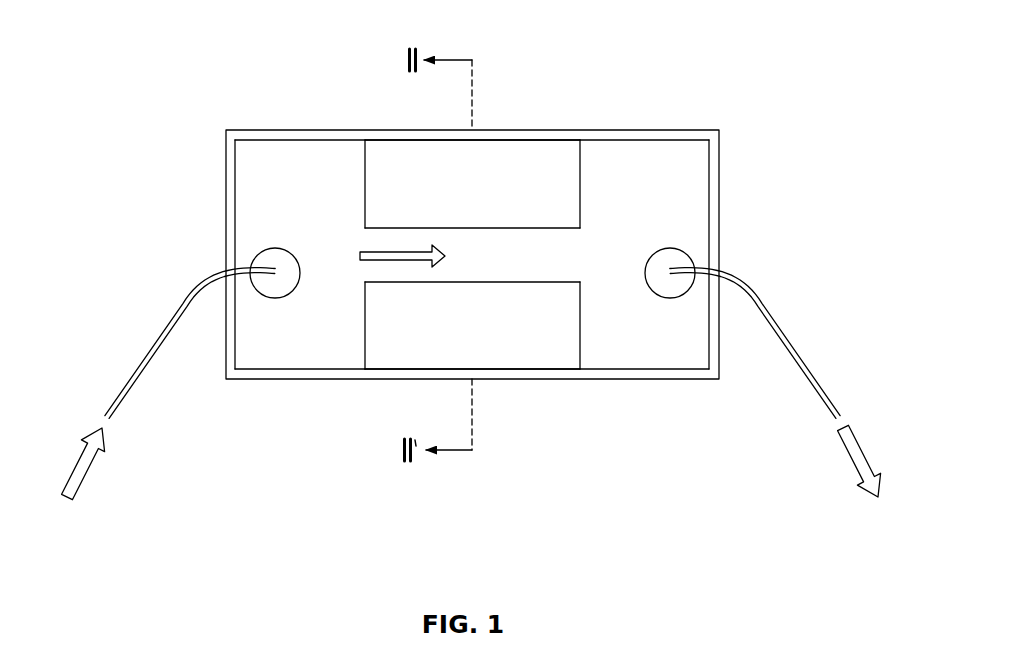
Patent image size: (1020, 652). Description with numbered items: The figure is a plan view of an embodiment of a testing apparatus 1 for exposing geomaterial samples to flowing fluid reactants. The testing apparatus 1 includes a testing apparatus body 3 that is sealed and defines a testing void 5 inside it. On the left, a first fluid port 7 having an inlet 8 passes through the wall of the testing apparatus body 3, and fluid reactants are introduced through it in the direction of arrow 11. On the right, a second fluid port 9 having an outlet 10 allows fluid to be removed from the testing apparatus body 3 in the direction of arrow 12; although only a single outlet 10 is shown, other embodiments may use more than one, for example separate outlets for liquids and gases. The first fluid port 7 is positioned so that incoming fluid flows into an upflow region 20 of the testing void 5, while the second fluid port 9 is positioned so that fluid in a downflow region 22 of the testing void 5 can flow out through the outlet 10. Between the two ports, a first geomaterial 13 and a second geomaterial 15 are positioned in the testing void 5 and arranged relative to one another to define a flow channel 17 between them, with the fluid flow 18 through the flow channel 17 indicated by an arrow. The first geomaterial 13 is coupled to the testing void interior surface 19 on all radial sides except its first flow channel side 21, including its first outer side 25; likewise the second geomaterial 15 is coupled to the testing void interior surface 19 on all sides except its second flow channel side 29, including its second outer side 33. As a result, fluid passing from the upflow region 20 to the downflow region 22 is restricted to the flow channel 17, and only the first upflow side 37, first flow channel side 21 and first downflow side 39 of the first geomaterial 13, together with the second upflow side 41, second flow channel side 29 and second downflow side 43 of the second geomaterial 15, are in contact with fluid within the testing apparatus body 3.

The testing apparatus 1 is at (808, 28).
The testing apparatus body 3 is at (247, 131).
The testing void 5 is at (467, 256).
The first fluid port 7 is at (258, 257).
The inlet 8 is at (122, 388).
The second fluid port 9 is at (688, 257).
The outlet 10 is at (822, 386).
The arrow 11 is at (66, 497).
The arrow 12 is at (879, 504).
The first geomaterial 13 is at (475, 161).
The second geomaterial 15 is at (476, 349).
The flow channel 17 is at (490, 240).
The fluid flow 18 is at (360, 256).
The testing void interior surface 19 is at (280, 367).
The upflow region 20 is at (263, 181).
The first flow channel side 21 is at (567, 233).
The downflow region 22 is at (677, 173).
The first outer side 25 is at (557, 137).
The second flow channel side 29 is at (570, 280).
The second outer side 33 is at (528, 374).
The first upflow side 37 is at (363, 178).
The first downflow side 39 is at (583, 177).
The second upflow side 41 is at (363, 327).
The second downflow side 43 is at (585, 340).